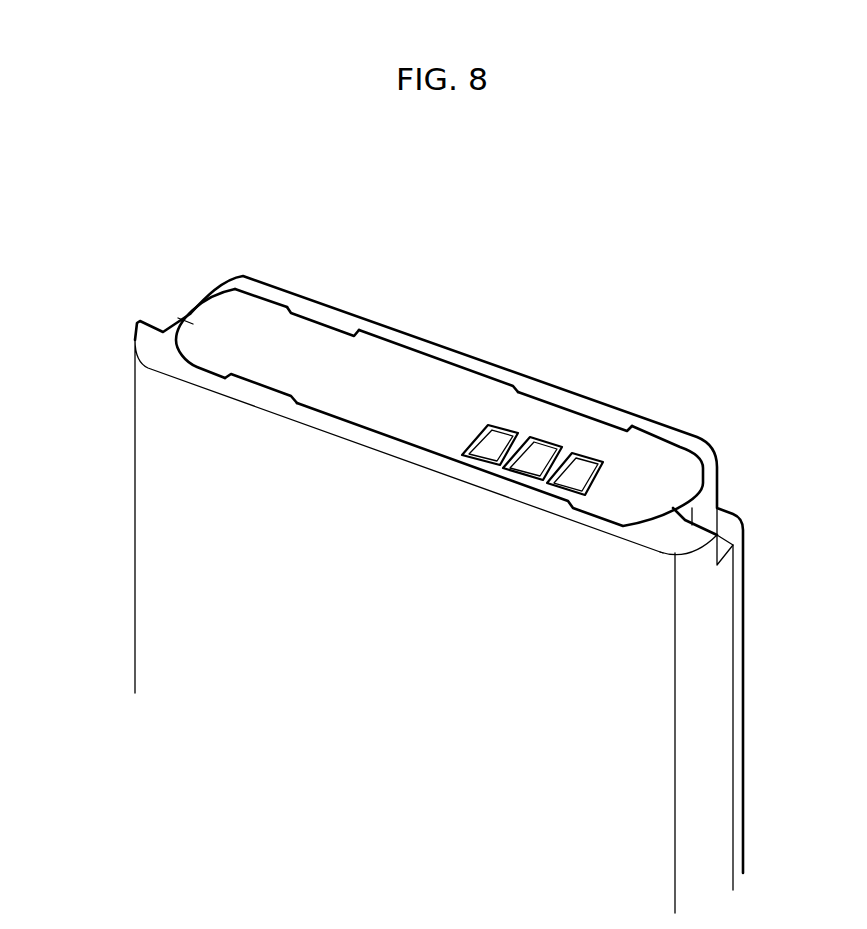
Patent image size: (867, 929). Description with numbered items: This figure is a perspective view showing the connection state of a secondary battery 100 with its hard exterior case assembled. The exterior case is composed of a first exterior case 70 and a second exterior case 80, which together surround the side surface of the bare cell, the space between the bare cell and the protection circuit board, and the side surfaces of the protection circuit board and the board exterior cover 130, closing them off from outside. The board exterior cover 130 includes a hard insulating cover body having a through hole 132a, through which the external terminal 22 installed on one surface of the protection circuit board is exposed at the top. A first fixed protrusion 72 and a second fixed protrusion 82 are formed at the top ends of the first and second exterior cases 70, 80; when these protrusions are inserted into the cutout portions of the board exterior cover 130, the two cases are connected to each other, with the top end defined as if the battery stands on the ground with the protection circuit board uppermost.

The secondary battery 100 is at (712, 312).
The first exterior case 70 is at (135, 553).
The second exterior case 80 is at (447, 344).
The second fixed protrusion 82 is at (623, 428).
The board exterior cover 130 is at (308, 334).
The first fixed protrusion 72 is at (273, 393).
The external terminal 22 is at (525, 472).
The through hole 132a is at (506, 427).